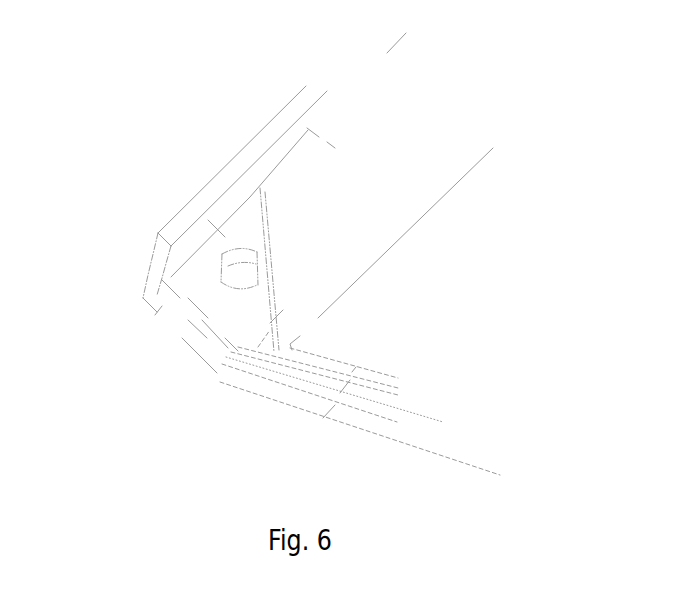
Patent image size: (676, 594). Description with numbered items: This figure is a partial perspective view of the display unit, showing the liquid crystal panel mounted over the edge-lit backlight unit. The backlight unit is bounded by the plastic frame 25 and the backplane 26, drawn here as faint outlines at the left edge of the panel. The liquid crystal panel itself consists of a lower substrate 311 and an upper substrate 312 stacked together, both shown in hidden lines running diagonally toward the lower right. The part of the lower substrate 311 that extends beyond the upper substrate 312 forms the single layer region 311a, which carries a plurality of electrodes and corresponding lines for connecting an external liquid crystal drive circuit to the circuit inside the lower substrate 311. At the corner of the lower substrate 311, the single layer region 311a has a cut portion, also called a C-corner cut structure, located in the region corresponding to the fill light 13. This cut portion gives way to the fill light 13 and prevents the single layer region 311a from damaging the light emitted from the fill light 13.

The single layer region 311a is at (285, 103).
The fill light 13 is at (202, 213).
The plastic frame 25 is at (150, 249).
The backplane 26 is at (158, 312).
The lower substrate 311 is at (250, 362).
The upper substrate 312 is at (318, 428).